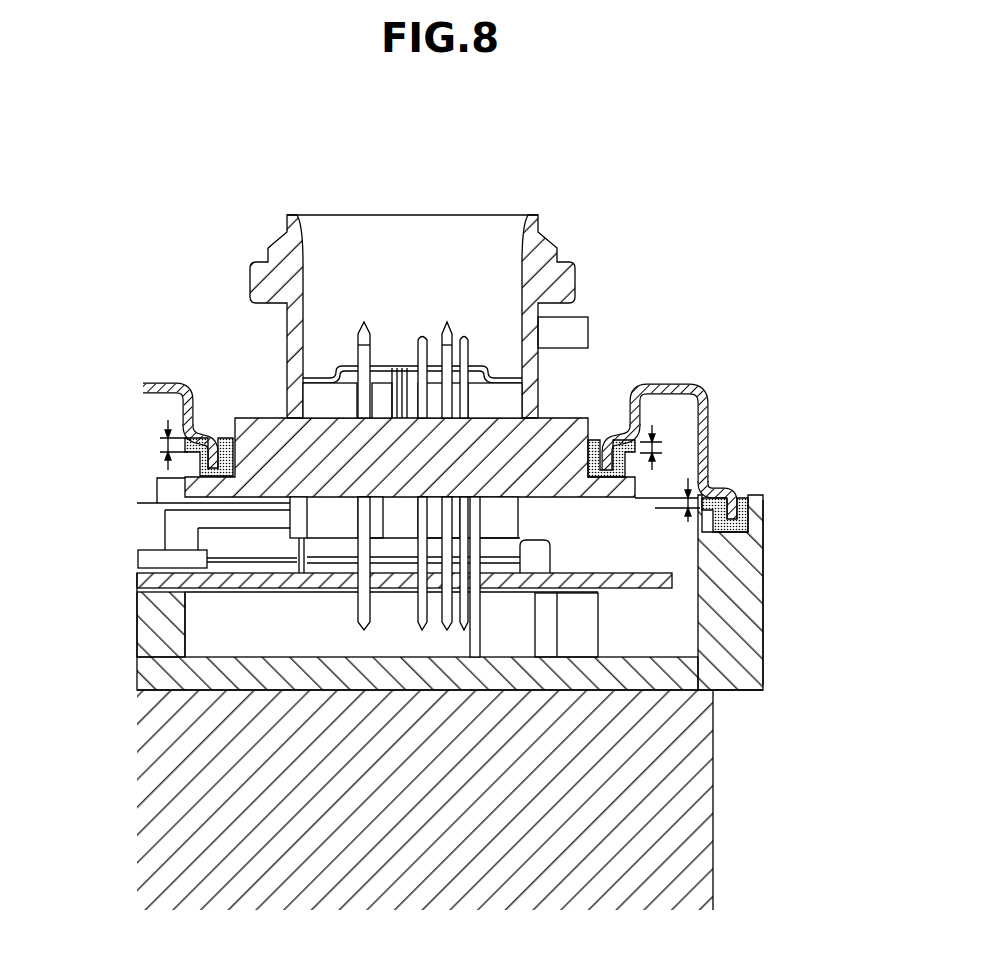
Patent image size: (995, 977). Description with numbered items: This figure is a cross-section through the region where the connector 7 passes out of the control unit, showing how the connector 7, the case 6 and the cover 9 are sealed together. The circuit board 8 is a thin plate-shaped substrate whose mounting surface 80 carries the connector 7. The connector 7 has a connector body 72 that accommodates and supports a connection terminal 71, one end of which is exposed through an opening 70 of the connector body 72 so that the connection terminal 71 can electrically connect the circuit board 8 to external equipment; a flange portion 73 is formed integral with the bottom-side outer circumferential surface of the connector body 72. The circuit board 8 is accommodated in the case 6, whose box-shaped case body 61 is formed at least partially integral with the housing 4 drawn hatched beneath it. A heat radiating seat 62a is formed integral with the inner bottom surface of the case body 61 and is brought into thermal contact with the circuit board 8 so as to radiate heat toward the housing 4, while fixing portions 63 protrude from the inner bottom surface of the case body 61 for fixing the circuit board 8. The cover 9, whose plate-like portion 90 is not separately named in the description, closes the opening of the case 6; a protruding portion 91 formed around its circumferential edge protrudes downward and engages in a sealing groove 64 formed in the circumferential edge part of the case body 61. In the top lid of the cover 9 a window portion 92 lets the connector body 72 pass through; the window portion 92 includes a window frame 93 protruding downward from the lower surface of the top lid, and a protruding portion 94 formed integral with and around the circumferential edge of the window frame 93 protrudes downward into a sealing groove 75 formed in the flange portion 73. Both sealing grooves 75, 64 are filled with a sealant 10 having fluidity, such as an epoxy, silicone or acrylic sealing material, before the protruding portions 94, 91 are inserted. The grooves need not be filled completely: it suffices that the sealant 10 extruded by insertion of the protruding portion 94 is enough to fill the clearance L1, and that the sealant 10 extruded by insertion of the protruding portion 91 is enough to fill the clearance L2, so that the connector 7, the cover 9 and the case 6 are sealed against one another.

The housing 4 is at (713, 750).
The case 6 is at (498, 625).
The connector 7 is at (222, 240).
The circuit board 8 is at (622, 597).
The cover 9 is at (442, 414).
The sealant 10 is at (233, 450).
The case body 61 is at (763, 613).
The heat radiating seat 62a is at (173, 633).
The fixing portions 63 is at (577, 633).
The sealing groove 64 is at (763, 557).
The opening 70 is at (298, 232).
The connection terminal 71 is at (448, 323).
The connector body 72 is at (287, 333).
The flange portion 73 is at (258, 417).
The sealing groove 75 is at (200, 475).
The mounting surface 80 is at (578, 573).
The plate portion 90 is at (442, 414).
The protruding portion 91 is at (733, 510).
The window portion 92 is at (442, 443).
The window frame 93 is at (177, 403).
The protruding portion 94 is at (200, 470).
The clearance L1 is at (411, 445).
The clearance L2 is at (668, 507).